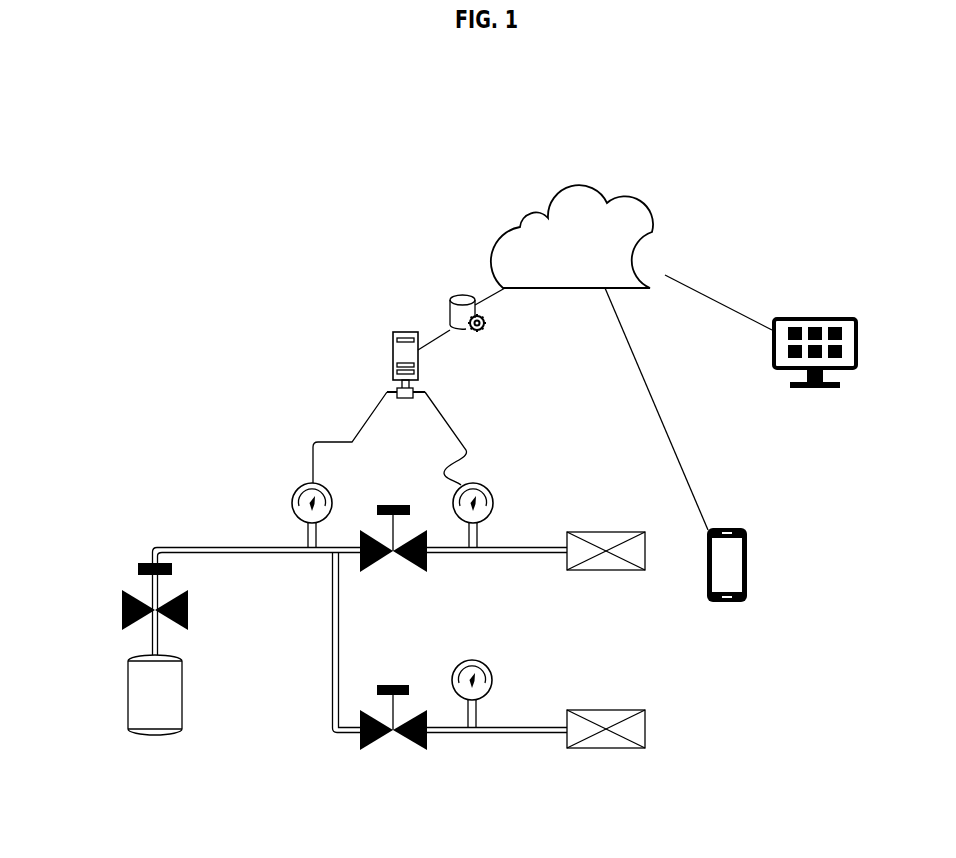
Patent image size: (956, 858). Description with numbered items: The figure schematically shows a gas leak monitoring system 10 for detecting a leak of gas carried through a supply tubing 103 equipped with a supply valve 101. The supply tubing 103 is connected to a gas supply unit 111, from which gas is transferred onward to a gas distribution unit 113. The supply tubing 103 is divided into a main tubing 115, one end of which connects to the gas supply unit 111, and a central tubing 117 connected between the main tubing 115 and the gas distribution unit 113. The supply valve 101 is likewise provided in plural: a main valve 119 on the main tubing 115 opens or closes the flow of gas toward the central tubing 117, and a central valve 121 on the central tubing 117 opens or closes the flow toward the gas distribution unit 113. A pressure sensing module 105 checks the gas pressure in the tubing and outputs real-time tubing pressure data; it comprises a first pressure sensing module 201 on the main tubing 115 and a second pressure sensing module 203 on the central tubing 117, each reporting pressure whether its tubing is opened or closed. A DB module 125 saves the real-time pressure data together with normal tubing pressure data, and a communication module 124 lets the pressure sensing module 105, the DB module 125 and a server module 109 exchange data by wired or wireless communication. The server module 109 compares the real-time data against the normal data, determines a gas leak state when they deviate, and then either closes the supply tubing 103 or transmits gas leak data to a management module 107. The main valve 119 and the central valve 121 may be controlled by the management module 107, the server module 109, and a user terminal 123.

The gas supply system 10 is at (87, 101).
The supply valve 101 is at (121, 668).
The supply tubing 103 is at (360, 596).
The pressure sensing module 105 is at (387, 556).
The management module 107 is at (812, 317).
The server module 109 is at (582, 196).
The gas supply unit 111 is at (155, 720).
The gas distribution unit 113 is at (612, 538).
The main tubing 115 is at (232, 553).
The central tubing 117 is at (522, 547).
The main valve 119 is at (122, 612).
The central valve 121 is at (368, 540).
The user terminal 123 is at (740, 570).
The communication module 124 is at (393, 352).
The DB module 125 is at (487, 321).
The first pressure sensing module 201 is at (308, 532).
The second pressure sensing module 203 is at (477, 530).